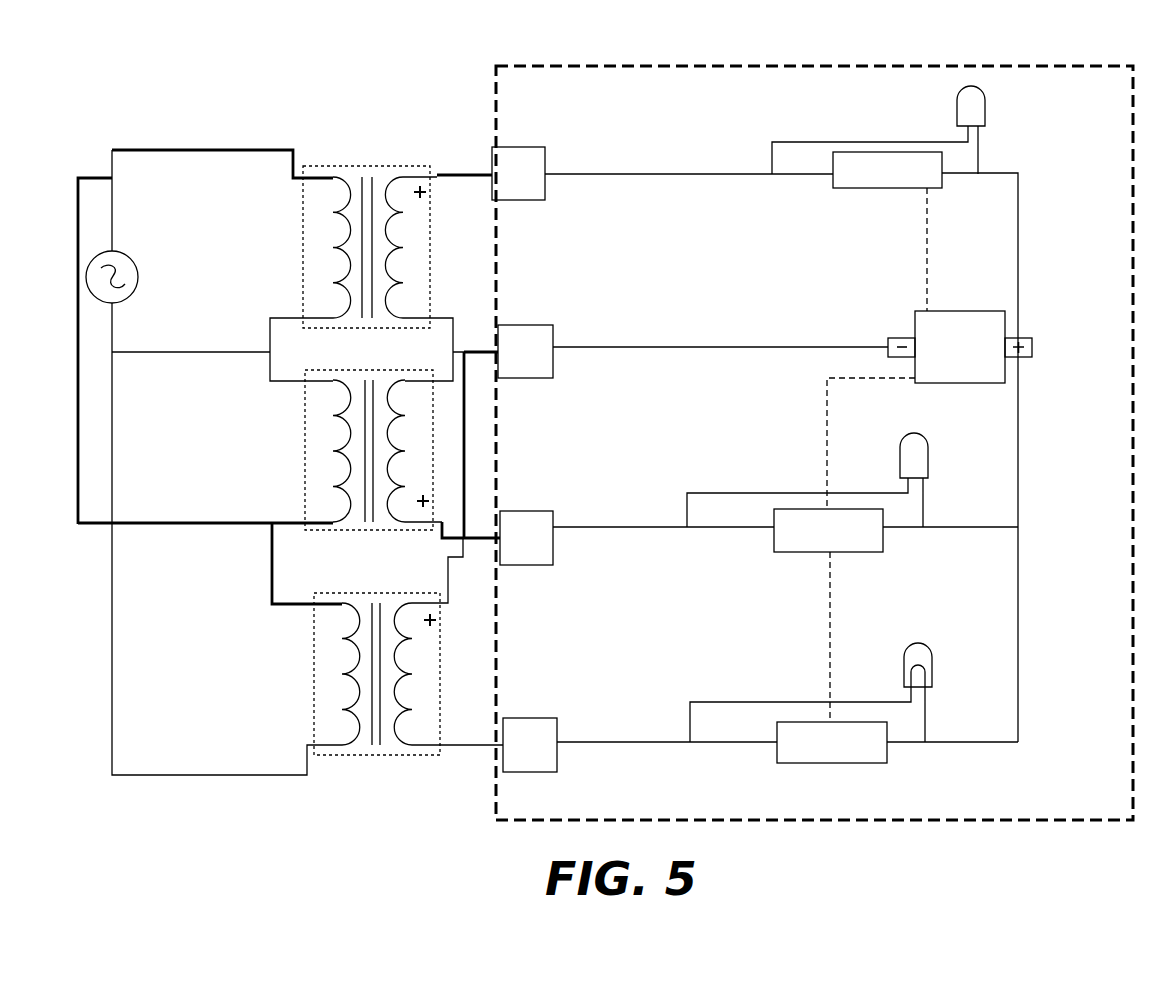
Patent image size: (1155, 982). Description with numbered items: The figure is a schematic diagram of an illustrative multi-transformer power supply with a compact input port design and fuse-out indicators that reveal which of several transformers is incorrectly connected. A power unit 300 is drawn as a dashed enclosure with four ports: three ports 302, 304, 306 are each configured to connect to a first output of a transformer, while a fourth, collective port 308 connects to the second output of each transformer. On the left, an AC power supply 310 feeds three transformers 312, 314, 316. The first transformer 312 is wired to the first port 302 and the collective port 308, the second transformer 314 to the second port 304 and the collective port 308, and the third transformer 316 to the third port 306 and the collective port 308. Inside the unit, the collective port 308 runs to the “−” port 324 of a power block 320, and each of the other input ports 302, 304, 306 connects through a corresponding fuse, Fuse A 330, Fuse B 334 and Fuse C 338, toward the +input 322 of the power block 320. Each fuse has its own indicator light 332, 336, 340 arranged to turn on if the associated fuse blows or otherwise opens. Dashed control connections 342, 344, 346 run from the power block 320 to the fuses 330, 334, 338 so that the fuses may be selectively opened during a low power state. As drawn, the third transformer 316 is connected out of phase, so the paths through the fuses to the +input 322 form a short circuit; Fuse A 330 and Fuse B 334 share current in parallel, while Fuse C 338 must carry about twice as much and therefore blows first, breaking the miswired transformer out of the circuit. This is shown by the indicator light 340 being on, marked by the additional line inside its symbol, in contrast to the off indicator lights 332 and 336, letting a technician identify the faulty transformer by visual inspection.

The power unit 300 is at (753, 66).
The first port 302 is at (546, 147).
The second port 304 is at (525, 511).
The third port 306 is at (531, 718).
The collective port 308 is at (532, 325).
The AC power supply 310 is at (120, 256).
The first transformer 312 is at (362, 166).
The second transformer 314 is at (318, 463).
The third transformer 316 is at (317, 684).
The power block 320 is at (968, 311).
The +input 322 is at (1032, 340).
The “−” port 324 is at (897, 338).
The Fuse A 330 is at (841, 190).
The indicator light 332 is at (985, 108).
The Fuse B 334 is at (838, 540).
The indicator light 336 is at (920, 447).
The Fuse C 338 is at (850, 750).
The indicator light 340 is at (925, 648).
The control connection 342 is at (927, 262).
The control connection 344 is at (827, 418).
The control connection 346 is at (830, 640).